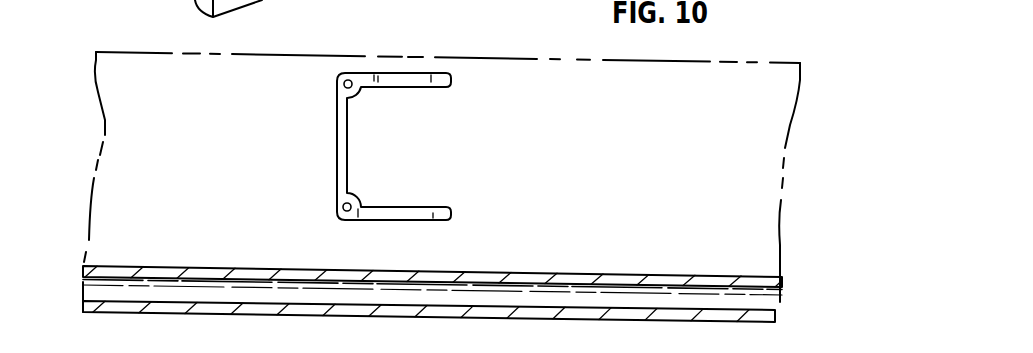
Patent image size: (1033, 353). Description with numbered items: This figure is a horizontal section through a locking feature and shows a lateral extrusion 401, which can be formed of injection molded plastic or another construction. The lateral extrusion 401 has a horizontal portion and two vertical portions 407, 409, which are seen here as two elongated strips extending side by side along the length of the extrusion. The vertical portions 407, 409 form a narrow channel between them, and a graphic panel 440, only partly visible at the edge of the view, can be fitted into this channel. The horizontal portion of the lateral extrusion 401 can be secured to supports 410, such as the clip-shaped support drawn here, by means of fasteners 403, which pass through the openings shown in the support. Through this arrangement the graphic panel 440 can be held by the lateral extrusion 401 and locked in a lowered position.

The graphic panel 440 is at (197, 8).
The lateral extrusion 401 is at (559, 68).
The fasteners 403 is at (349, 83).
The supports 410 is at (337, 147).
The vertical portion 407 is at (218, 266).
The vertical portion 409 is at (97, 313).